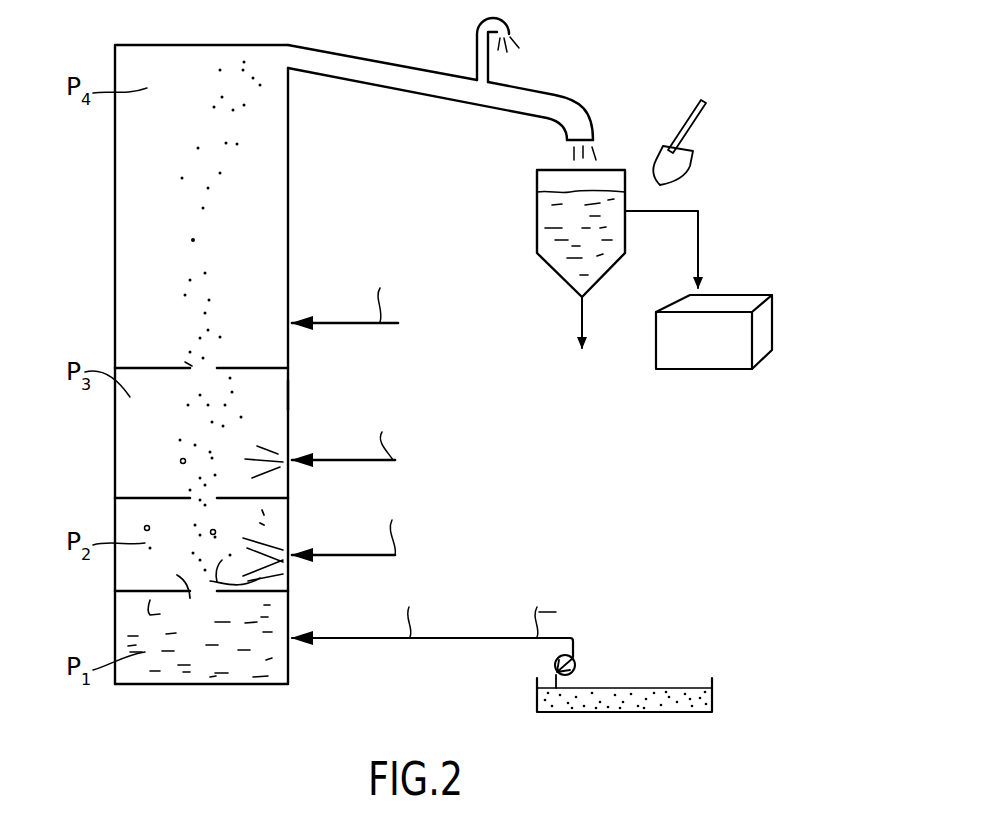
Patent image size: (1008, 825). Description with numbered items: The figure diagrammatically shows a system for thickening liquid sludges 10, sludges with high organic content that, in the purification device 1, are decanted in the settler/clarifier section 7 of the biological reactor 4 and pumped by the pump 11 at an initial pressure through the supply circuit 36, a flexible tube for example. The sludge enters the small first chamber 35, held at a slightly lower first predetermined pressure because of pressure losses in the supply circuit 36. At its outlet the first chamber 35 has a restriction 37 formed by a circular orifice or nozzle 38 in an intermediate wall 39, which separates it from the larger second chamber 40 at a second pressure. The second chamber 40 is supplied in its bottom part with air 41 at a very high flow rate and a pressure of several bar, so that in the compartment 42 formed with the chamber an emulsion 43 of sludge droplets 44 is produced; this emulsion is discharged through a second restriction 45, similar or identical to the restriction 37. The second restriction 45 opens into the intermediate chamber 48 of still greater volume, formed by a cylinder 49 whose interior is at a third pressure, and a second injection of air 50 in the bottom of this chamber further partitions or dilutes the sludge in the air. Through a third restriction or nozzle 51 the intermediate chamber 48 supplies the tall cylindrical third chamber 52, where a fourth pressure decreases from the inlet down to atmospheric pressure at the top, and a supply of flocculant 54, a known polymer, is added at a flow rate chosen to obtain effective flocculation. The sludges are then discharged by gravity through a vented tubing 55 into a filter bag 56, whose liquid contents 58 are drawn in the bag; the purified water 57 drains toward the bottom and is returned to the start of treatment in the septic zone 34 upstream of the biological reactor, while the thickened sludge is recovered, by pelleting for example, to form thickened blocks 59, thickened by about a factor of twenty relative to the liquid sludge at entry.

The purification device 1 is at (345, 240).
The biological reactor 4 is at (228, 384).
The settler/clarifier section 7 is at (537, 690).
The liquid sludge 10 is at (652, 689).
The pump 11 is at (576, 664).
The septic zone 34 is at (600, 378).
The first chamber 35 is at (197, 650).
The supply circuit 36 is at (480, 637).
The restriction 37 is at (182, 590).
The orifice or nozzle 38 is at (218, 586).
The intermediate wall 39 is at (152, 613).
The second chamber 40 is at (178, 524).
The air 41 is at (355, 554).
The compartment 42 is at (252, 529).
The emulsion 43 is at (270, 517).
The sludge droplets 44 is at (180, 460).
The second restriction 45 is at (186, 494).
The intermediate chamber 48 is at (158, 422).
The cylinder 49 is at (290, 394).
The second injection of air 50 is at (333, 459).
The third restriction or nozzle 51 is at (188, 367).
The third chamber 52 is at (193, 240).
The supply of flocculant 54 is at (340, 322).
The vented tubing 55 is at (383, 63).
The filter bag 56 is at (537, 177).
The purified water 57 is at (580, 313).
The liquid in tank 58 is at (560, 218).
The thickened blocks 59 is at (701, 342).